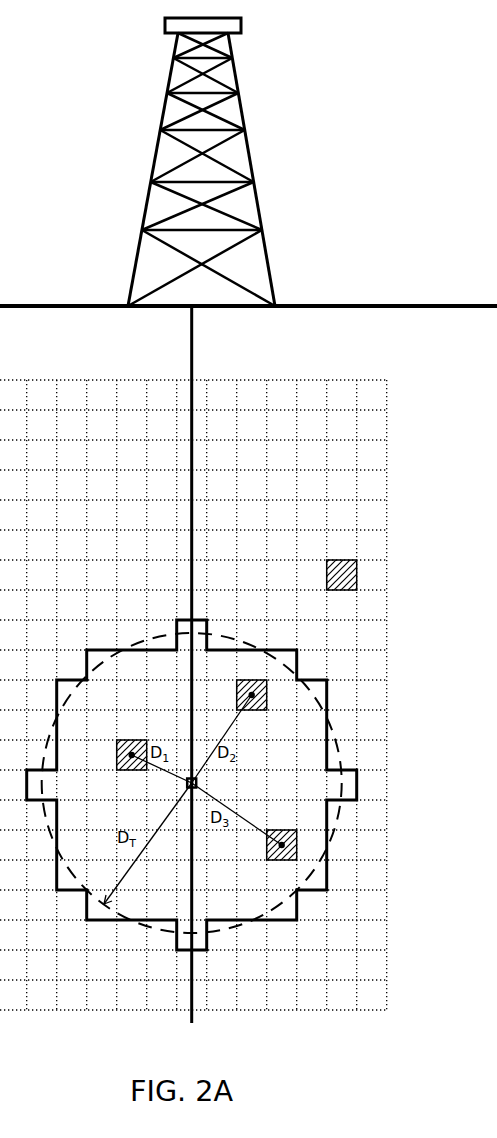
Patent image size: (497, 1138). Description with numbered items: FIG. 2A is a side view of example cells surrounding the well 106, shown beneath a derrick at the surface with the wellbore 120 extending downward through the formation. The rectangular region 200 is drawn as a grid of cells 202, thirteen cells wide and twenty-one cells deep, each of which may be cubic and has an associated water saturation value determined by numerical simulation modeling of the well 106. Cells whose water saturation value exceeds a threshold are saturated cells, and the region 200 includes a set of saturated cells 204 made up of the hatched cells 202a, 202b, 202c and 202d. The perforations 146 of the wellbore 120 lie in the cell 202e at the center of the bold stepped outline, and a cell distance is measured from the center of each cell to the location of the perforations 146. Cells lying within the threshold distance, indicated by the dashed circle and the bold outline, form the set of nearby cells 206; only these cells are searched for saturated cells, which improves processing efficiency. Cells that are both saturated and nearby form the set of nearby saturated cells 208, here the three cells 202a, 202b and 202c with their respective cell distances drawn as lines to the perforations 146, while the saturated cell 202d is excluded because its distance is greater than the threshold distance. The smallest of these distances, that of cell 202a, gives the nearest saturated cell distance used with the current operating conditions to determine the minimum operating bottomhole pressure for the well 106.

The well 106 is at (94, 249).
The wellbore 120 is at (197, 361).
The rectangular region 200 is at (390, 379).
The cells 202 is at (375, 452).
The cell 202a is at (130, 772).
The cell 202b is at (248, 714).
The cell 202c is at (273, 861).
The saturated cell 202d is at (327, 557).
The cell containing the perforations 202e is at (205, 790).
The set of saturated cells 204 is at (277, 560).
The set of nearby cells 206 is at (83, 647).
The set of nearby saturated cells 208 is at (98, 776).
The perforations 146 is at (201, 781).